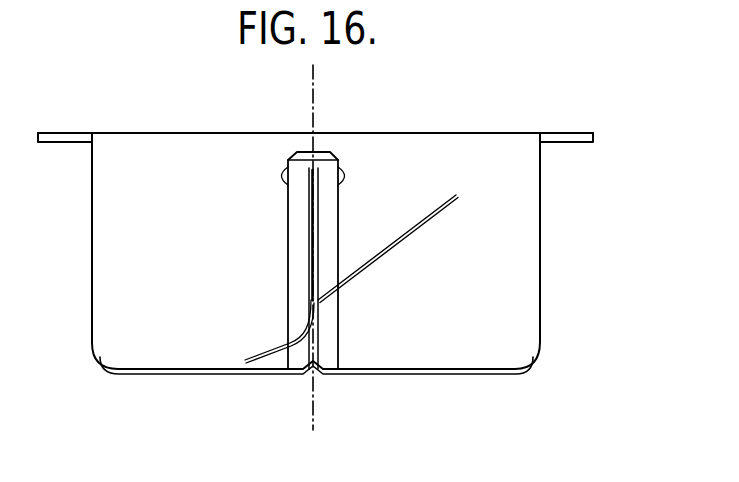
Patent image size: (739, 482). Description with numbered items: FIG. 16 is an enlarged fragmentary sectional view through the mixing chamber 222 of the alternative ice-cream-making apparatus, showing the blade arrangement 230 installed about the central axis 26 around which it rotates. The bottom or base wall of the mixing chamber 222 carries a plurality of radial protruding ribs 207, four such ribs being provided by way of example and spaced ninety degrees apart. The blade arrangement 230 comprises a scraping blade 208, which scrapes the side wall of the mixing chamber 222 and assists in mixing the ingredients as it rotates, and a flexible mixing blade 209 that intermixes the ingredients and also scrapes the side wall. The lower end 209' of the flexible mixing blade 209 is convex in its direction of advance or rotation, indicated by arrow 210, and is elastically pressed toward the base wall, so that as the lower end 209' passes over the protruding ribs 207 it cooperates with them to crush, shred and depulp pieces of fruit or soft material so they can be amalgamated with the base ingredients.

The central axis 26 is at (316, 101).
The mixing chamber 222 is at (548, 213).
The protruding ribs 207 is at (190, 363).
The arrow indicating direction of advance or rotation 210 is at (303, 194).
The blade arrangement 230 is at (303, 249).
The flexible mixing blade 209 is at (359, 235).
The lower end of the flexible mixing blade 209' is at (271, 331).
The scraping blade 208 is at (420, 227).